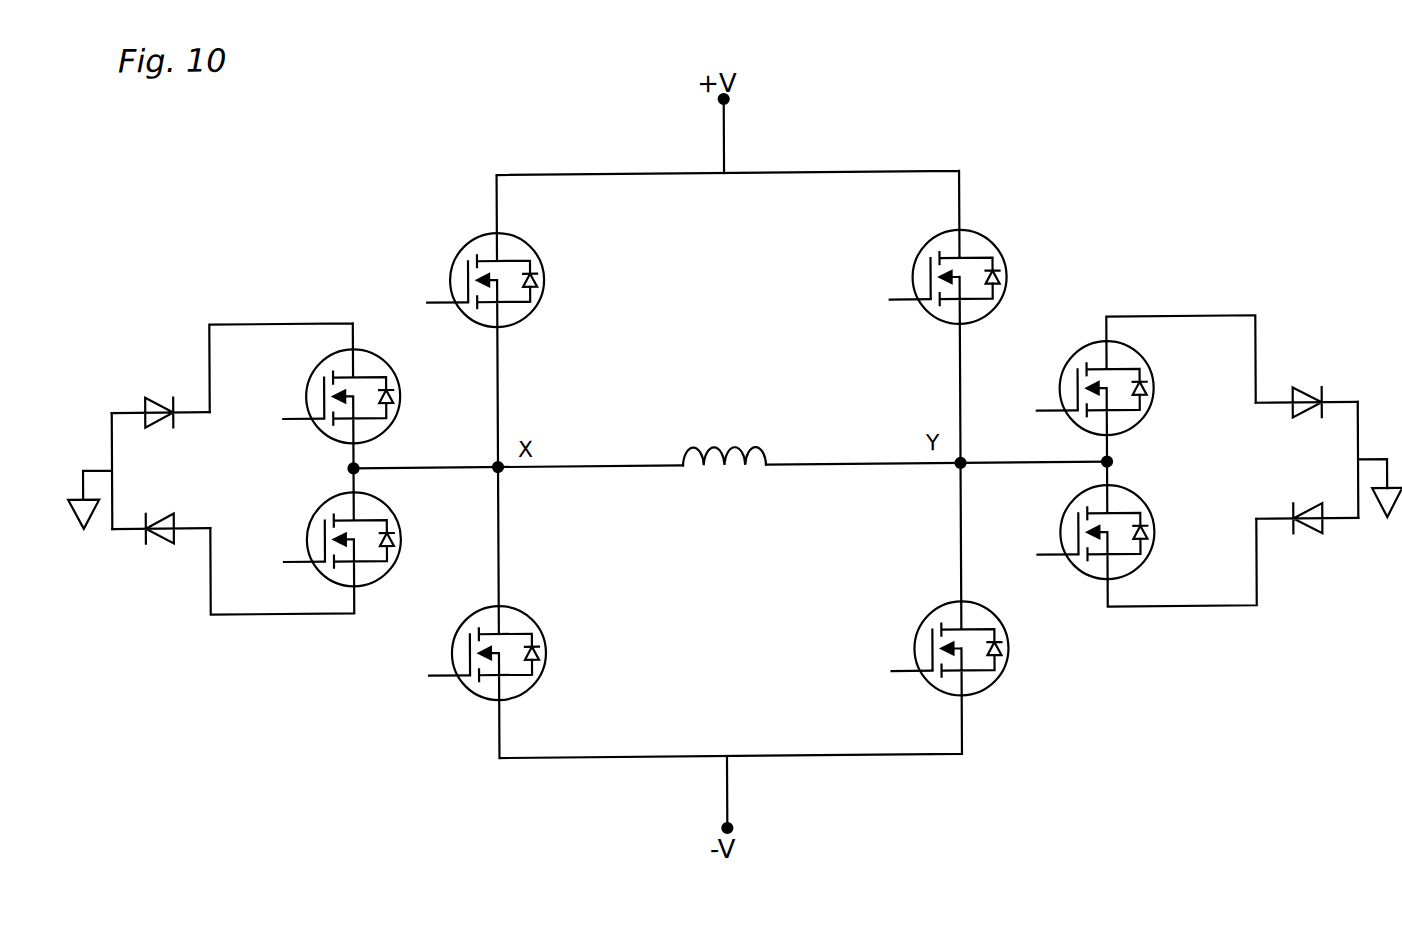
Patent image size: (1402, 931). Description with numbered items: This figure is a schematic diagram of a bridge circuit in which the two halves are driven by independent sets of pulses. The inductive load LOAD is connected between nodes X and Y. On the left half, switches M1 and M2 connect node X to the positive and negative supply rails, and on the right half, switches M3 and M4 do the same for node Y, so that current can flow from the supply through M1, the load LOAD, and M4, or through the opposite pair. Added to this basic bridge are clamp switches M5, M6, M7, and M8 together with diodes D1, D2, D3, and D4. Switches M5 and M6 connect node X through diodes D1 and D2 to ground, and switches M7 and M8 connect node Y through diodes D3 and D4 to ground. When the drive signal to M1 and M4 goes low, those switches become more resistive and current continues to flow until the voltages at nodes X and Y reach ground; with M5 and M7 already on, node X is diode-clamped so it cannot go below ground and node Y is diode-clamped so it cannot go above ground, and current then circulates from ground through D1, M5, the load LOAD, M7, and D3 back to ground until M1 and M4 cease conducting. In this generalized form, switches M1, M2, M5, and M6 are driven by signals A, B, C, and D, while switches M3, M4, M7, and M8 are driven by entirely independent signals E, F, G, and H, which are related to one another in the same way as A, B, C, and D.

The switch M1 is at (496, 280).
The switch M2 is at (498, 653).
The switch M3 is at (957, 277).
The switch M4 is at (959, 649).
The switch M5 is at (352, 397).
The switch M6 is at (353, 540).
The switch M7 is at (1103, 388).
The switch M8 is at (1104, 532).
The diode D1 is at (161, 398).
The diode D2 is at (161, 545).
The diode D3 is at (1307, 385).
The diode D4 is at (1307, 533).
The load LOAD is at (724, 443).